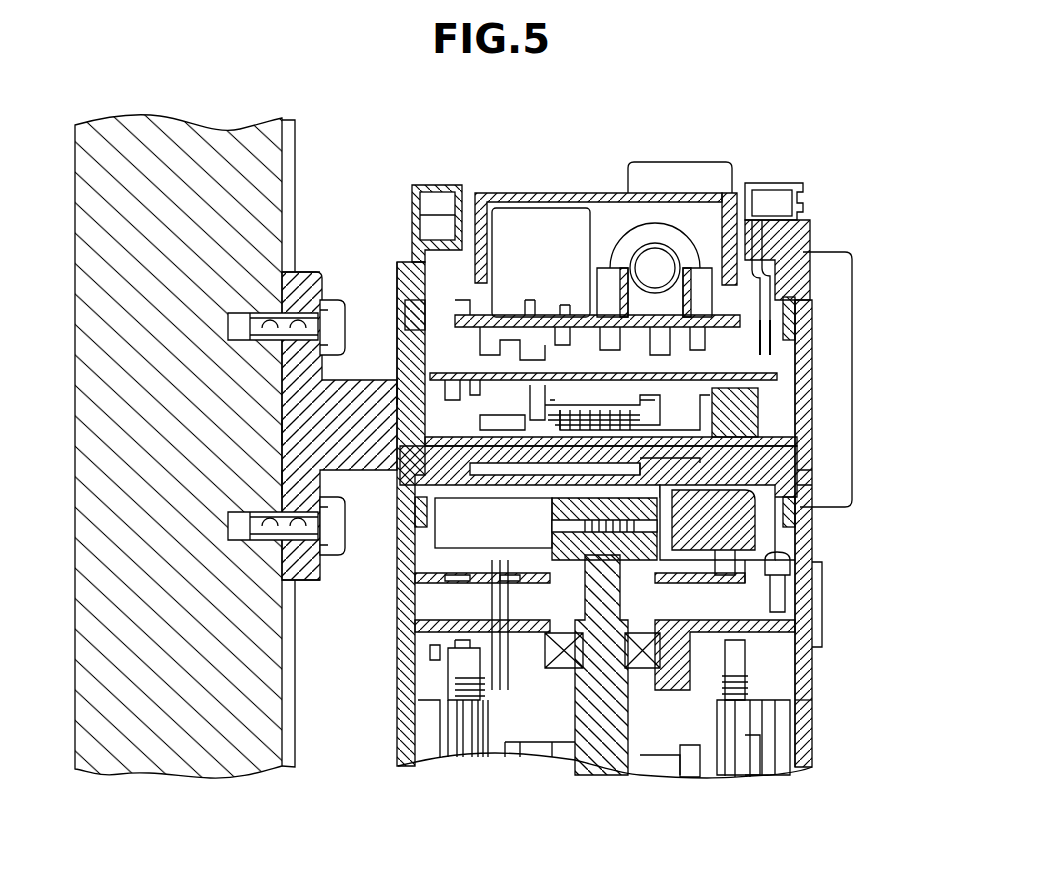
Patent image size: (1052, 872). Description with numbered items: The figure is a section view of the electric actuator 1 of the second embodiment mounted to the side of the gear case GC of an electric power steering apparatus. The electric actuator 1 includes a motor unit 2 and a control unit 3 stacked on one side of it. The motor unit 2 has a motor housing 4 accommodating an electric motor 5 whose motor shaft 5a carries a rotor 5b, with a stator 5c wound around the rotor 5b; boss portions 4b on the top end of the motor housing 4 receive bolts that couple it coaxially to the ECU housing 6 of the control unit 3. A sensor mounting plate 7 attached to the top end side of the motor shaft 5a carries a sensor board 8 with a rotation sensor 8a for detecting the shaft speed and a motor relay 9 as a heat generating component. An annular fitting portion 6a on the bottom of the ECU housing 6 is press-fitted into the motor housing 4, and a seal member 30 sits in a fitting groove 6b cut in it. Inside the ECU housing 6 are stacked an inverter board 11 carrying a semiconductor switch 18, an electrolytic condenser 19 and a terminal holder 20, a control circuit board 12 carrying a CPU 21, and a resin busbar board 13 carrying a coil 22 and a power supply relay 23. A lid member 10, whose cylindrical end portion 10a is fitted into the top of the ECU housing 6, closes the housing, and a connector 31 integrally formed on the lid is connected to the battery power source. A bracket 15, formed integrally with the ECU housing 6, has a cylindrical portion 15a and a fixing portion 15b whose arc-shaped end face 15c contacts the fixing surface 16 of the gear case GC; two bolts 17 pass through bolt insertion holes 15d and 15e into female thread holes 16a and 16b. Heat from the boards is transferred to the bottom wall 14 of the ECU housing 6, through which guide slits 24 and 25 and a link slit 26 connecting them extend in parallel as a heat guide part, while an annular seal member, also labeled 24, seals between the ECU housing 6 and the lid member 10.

The gear case GC is at (273, 690).
The bracket 15 is at (372, 378).
The cylindrical portion 15a is at (396, 405).
The fixing portion 15b is at (282, 432).
The end face 15c is at (280, 480).
The bolt insertion hole 15d is at (313, 272).
The bolt insertion hole 15e is at (313, 573).
The fixing surface 16 is at (233, 431).
The female thread hole 16a is at (258, 530).
The female thread hole 16b is at (253, 320).
The bolts 17 is at (333, 312).
The lid member 10 is at (399, 285).
The cylindrical end portion 10a is at (790, 350).
The control circuit board 12 is at (778, 377).
The coil 22 is at (658, 232).
The power supply relay 23 is at (530, 225).
The connector 31 is at (805, 200).
The resin busbar board 13 is at (772, 290).
The ECU housing 6 is at (800, 373).
The control unit 3 is at (852, 315).
The boss portions 4b is at (812, 505).
The microcomputer 21 is at (728, 347).
The guide slit 24 is at (790, 325).
The terminal holder 20 is at (757, 395).
The electrolytic condenser 19 is at (690, 408).
The semiconductor switch 18 is at (770, 440).
The inverter board 11 is at (733, 458).
The link slit 26 is at (618, 470).
The guide slit 25 is at (800, 482).
The sensor mounting plate 7 is at (655, 518).
The seal member 30 is at (435, 510).
The bottom wall 14 is at (430, 515).
The fitting groove 6b is at (420, 530).
The annular fitting portion 6a is at (795, 548).
The sensor board 8 is at (552, 517).
The rotation sensor 8a is at (728, 567).
The motor relay 9 is at (763, 583).
The motor unit 2 is at (812, 675).
The electric actuator 1 is at (838, 638).
The electric motor 5 is at (802, 758).
The motor shaft 5a is at (730, 770).
The rotor 5b is at (757, 742).
The stator 5c is at (690, 753).
The motor housing 4 is at (807, 745).